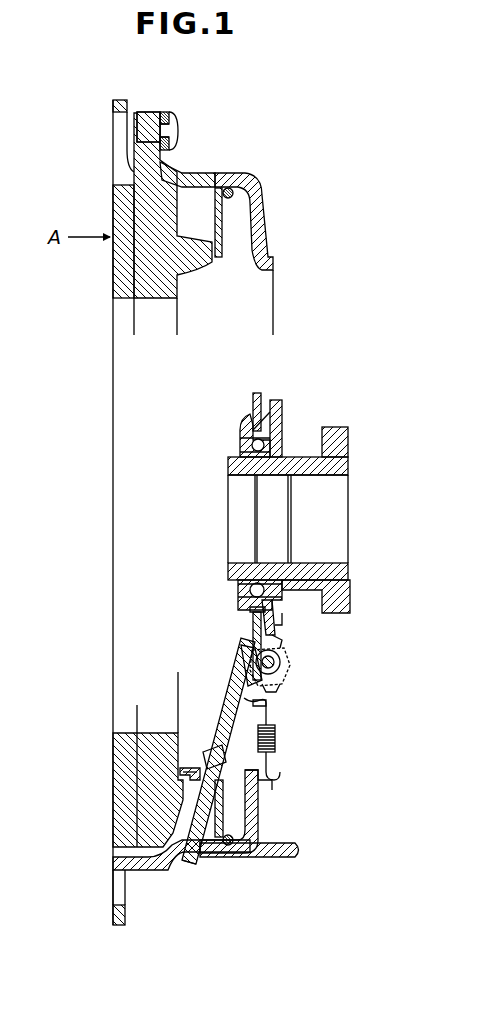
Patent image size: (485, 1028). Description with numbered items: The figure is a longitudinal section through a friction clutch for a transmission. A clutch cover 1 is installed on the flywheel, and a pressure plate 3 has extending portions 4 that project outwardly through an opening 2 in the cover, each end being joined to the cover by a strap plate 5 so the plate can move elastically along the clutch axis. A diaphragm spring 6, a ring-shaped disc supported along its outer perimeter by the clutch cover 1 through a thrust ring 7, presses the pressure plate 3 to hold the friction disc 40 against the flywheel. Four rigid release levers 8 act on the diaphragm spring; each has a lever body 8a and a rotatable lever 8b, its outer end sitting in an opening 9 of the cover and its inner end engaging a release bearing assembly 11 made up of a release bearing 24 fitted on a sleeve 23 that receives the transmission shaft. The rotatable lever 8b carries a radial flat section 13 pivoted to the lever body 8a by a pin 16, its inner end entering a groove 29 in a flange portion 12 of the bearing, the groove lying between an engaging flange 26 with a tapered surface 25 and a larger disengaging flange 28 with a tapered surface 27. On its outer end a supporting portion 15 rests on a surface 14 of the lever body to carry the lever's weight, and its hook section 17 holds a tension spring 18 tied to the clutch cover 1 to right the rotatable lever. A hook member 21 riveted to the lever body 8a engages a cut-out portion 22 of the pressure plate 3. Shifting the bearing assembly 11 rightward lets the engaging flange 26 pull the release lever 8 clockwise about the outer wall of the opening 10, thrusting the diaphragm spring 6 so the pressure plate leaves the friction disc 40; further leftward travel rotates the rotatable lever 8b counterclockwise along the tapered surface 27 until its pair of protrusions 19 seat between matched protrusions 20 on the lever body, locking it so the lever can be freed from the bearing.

The clutch cover 1 is at (218, 180).
The opening 2 is at (188, 176).
The pressure plate 3 is at (178, 276).
The extending portion 4 is at (150, 120).
The strap plate 5 is at (170, 116).
The diaphragm spring 6 is at (225, 820).
The thrust ring 7 is at (250, 851).
The release lever 8 is at (234, 696).
The lever body 8a is at (210, 742).
The rotatable lever 8b is at (264, 706).
The opening 9 is at (195, 860).
The opening 10 is at (210, 866).
The release bearing assembly 11 is at (226, 552).
The flange portion 12 is at (276, 628).
The flat section 13 is at (255, 632).
The surface 14 is at (263, 776).
The supporting portion 15 is at (268, 712).
The pin 16 is at (283, 676).
The hook section 17 is at (245, 662).
The tension spring 18 is at (276, 740).
The protrusions 19 is at (276, 686).
The matched protrusions 20 is at (286, 660).
The hook member 21 is at (185, 768).
The cut-out portion 22 is at (180, 776).
The sleeve 23 is at (350, 465).
The release bearing 24 is at (245, 432).
The tapered surface 25 is at (250, 590).
The engaging flange 26 is at (257, 607).
The tapered surface 27 is at (278, 630).
The disengaging flange 28 is at (285, 642).
The groove 29 is at (276, 598).
The friction disc 40 is at (118, 830).